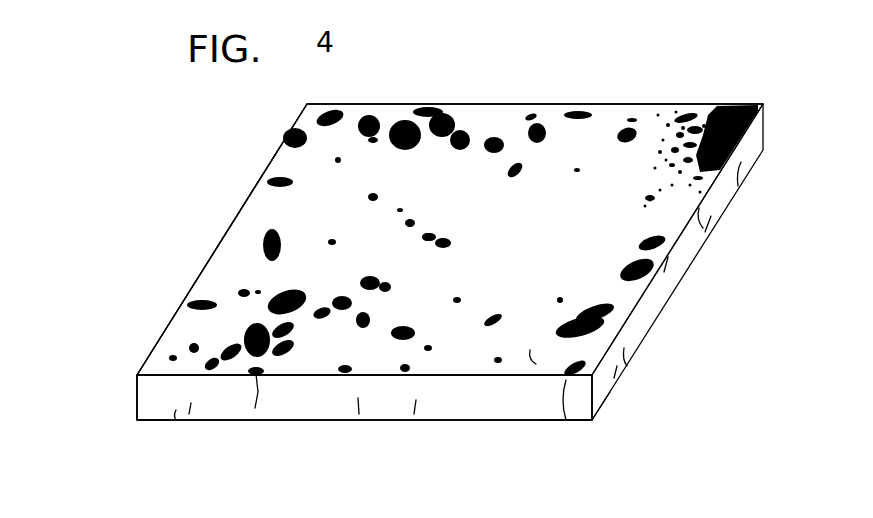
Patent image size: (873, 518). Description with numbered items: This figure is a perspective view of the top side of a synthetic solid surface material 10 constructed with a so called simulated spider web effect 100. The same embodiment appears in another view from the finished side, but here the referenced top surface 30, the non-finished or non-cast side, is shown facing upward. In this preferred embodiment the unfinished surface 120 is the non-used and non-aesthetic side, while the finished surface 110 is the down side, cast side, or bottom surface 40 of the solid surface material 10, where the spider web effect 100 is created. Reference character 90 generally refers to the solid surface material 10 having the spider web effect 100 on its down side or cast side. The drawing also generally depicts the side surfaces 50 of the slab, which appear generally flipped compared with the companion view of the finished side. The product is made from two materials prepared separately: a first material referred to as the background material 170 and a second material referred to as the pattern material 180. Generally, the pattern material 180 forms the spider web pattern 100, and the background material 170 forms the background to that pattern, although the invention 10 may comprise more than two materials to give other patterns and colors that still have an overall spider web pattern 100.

The solid surface material 10 is at (775, 286).
The top surface 30 is at (190, 325).
The bottom surface 40 is at (178, 414).
The side surfaces 50 is at (160, 405).
The solid surface material with spider web effect 90 is at (205, 282).
The spider web effect 100 is at (540, 420).
The finished surface 110 is at (565, 422).
The unfinished surface 120 is at (250, 252).
The background material 170 is at (577, 168).
The pattern material 180 is at (738, 104).